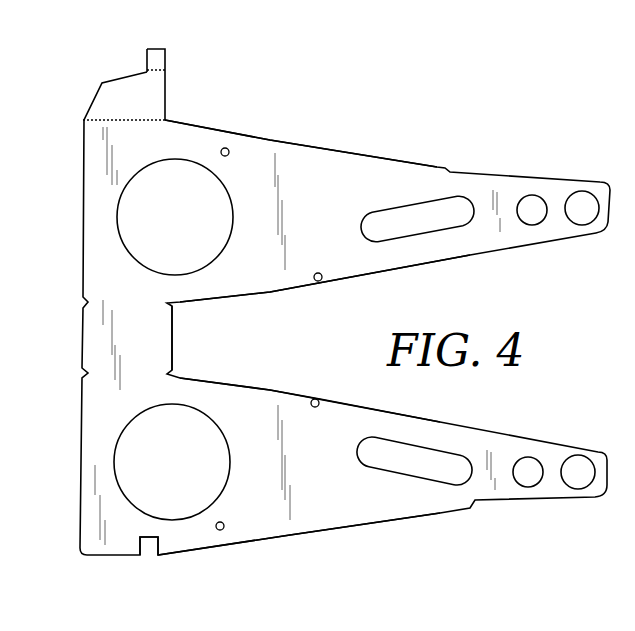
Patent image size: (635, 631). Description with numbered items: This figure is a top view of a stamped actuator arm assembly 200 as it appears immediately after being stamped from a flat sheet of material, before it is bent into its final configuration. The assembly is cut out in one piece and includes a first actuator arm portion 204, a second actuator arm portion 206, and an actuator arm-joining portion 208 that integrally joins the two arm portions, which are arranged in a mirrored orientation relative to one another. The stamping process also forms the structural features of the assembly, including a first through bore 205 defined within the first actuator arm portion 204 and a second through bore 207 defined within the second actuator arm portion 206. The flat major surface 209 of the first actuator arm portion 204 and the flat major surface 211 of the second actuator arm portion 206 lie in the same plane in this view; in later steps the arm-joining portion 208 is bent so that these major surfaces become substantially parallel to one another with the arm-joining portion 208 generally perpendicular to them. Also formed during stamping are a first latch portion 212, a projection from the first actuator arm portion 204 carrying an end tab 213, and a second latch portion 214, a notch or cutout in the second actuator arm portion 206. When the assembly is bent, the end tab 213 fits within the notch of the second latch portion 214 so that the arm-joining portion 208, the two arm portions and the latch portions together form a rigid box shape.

The actuator arm assembly 200 is at (552, 127).
The first actuator arm portion 204 is at (352, 152).
The first through bore 205 is at (196, 196).
The second actuator arm portion 206 is at (352, 407).
The second through bore 207 is at (185, 484).
The actuator arm-joining portion 208 is at (173, 355).
The major surface of the first actuator arm portion 209 is at (392, 257).
The major surface of the second actuator arm portion 211 is at (383, 510).
The first latch portion 212 is at (145, 112).
The end tab 213 is at (155, 62).
The second latch portion 214 is at (141, 563).